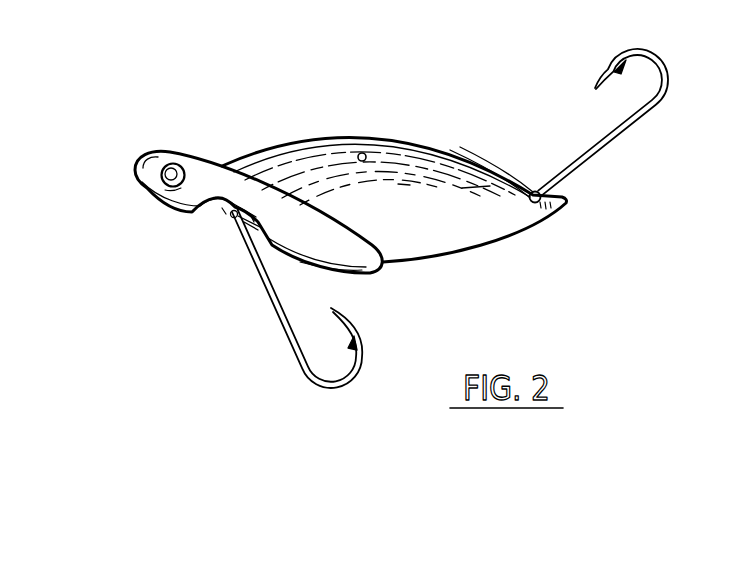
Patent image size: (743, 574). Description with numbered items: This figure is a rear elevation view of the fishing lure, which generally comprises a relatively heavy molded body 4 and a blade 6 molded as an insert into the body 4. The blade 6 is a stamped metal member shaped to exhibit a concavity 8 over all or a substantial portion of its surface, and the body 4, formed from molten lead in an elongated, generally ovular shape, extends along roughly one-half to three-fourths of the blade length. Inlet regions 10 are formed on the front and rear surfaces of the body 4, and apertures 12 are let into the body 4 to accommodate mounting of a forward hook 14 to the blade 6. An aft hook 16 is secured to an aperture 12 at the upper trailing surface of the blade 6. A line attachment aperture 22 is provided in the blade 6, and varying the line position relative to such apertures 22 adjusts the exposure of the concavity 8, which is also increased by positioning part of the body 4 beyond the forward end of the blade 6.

The body 4 is at (163, 208).
The blade 6 is at (298, 136).
The concavity 8 is at (455, 227).
The inlet regions 10 is at (213, 227).
The apertures 12 is at (227, 231).
The forward hook 14 is at (307, 383).
The aft hook 16 is at (668, 99).
The line attachment aperture 22 is at (363, 153).